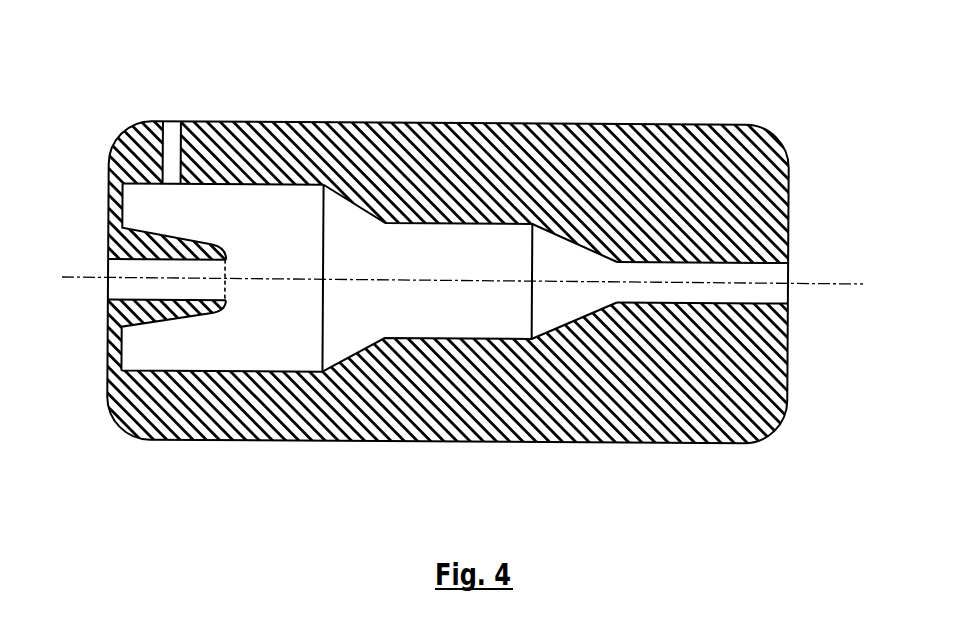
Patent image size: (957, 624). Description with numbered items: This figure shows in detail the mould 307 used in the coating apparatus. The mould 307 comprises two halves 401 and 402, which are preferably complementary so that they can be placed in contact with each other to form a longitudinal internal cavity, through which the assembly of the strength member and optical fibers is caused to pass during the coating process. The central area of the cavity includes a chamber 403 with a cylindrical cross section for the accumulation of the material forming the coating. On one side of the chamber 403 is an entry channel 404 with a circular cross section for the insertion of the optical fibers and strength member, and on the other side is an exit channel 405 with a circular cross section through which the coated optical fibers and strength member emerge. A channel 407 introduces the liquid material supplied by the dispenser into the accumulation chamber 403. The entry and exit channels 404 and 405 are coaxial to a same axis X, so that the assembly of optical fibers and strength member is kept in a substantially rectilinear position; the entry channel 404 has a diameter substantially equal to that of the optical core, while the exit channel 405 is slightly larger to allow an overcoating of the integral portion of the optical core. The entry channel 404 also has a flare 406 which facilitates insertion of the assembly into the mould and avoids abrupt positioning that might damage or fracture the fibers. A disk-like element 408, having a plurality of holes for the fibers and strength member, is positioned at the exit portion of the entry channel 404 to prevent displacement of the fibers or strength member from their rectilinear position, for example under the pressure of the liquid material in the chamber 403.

The mould 307 is at (498, 88).
The mould half 401 is at (672, 172).
The mould half 402 is at (727, 403).
The chamber 403 is at (314, 262).
The entry channel 404 is at (177, 285).
The exit channel 405 is at (677, 293).
The flare 406 is at (120, 253).
The channel 407 is at (173, 135).
The disk-like element 408 is at (230, 273).
The axis X is at (813, 283).